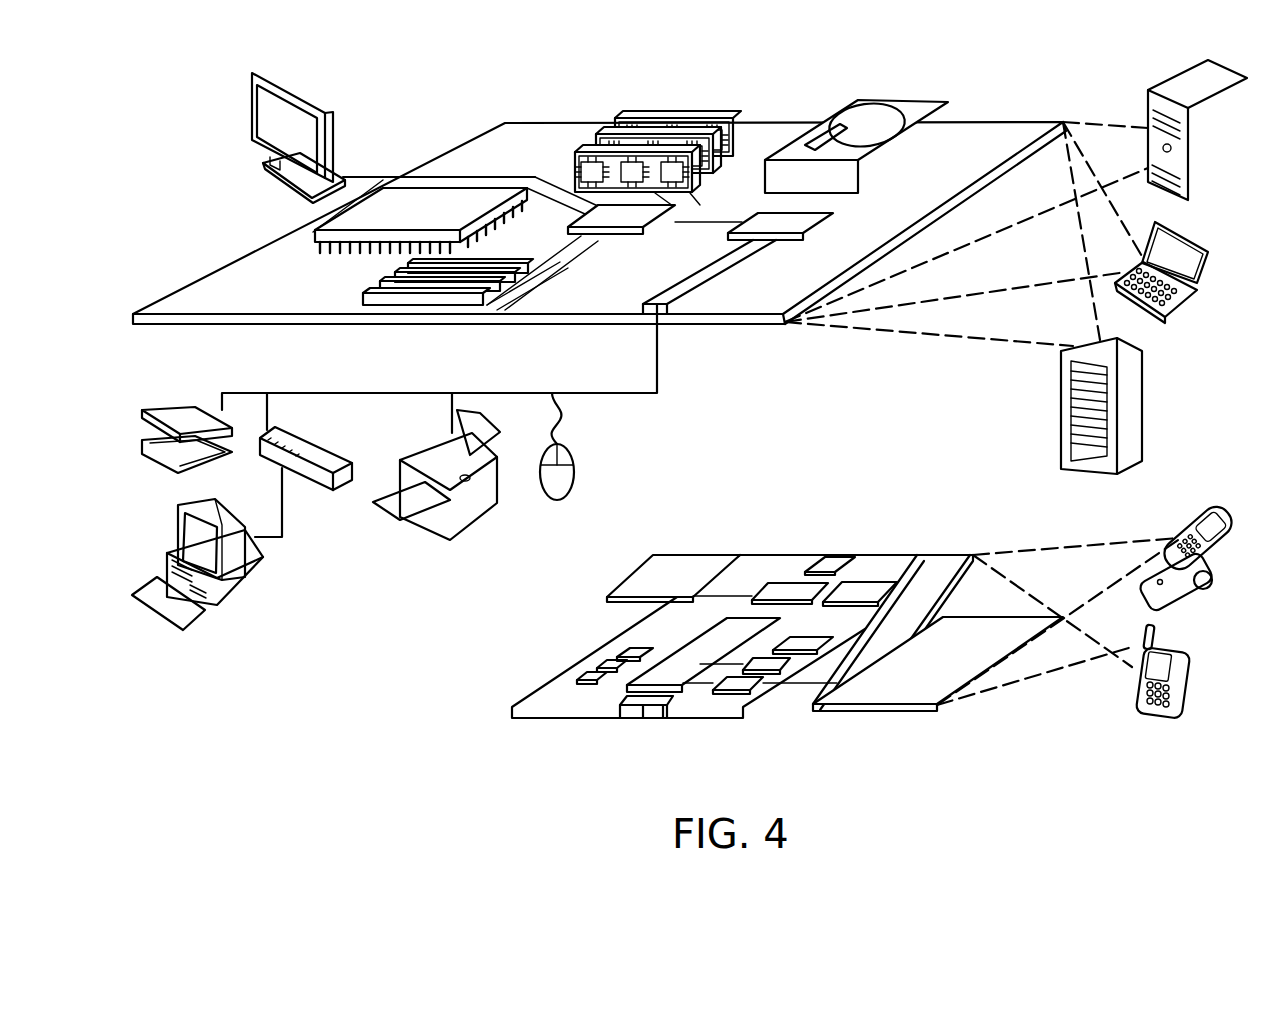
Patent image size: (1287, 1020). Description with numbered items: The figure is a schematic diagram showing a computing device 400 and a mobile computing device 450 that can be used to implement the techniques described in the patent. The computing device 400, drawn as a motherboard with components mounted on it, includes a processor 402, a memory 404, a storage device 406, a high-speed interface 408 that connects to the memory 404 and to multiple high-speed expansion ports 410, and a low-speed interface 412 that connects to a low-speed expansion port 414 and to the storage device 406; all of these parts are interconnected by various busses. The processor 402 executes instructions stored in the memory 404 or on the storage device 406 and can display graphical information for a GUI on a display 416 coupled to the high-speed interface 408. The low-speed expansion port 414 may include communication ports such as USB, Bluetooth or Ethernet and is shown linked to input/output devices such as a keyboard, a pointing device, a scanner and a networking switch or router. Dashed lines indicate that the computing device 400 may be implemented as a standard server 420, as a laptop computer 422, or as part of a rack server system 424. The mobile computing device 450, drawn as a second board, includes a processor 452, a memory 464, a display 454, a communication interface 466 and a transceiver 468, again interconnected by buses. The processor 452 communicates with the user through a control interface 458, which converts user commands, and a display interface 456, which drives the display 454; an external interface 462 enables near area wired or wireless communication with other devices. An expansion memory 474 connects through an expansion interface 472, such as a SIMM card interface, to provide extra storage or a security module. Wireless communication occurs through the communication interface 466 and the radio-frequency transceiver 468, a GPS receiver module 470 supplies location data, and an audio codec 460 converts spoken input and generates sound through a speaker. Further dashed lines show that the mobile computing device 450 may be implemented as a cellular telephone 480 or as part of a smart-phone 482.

The computing device 400 is at (418, 62).
The processor 402 is at (314, 236).
The memory 404 is at (630, 150).
The storage device 406 is at (842, 112).
The high-speed interface 408 is at (590, 212).
The high-speed expansion ports 410 is at (365, 293).
The low-speed interface 412 is at (790, 222).
The low-speed expansion port 414 is at (667, 315).
The display 416 is at (252, 74).
The standard server 420 is at (1148, 110).
The laptop computer 422 is at (1212, 247).
The rack server system 424 is at (1061, 446).
The mobile computing device 450 is at (482, 720).
The processor 452 is at (678, 680).
The display 454 is at (905, 692).
The display interface 456 is at (745, 690).
The control interface 458 is at (758, 667).
The audio codec 460 is at (790, 650).
The external interface 462 is at (647, 705).
The memory 464 is at (594, 680).
The communication interface 466 is at (790, 586).
The transceiver 468 is at (862, 586).
The GPS receiver module 470 is at (840, 560).
The expansion interface 472 is at (727, 567).
The expansion memory 474 is at (655, 574).
The cellular telephone 480 is at (1190, 512).
The smart-phone 482 is at (1135, 683).